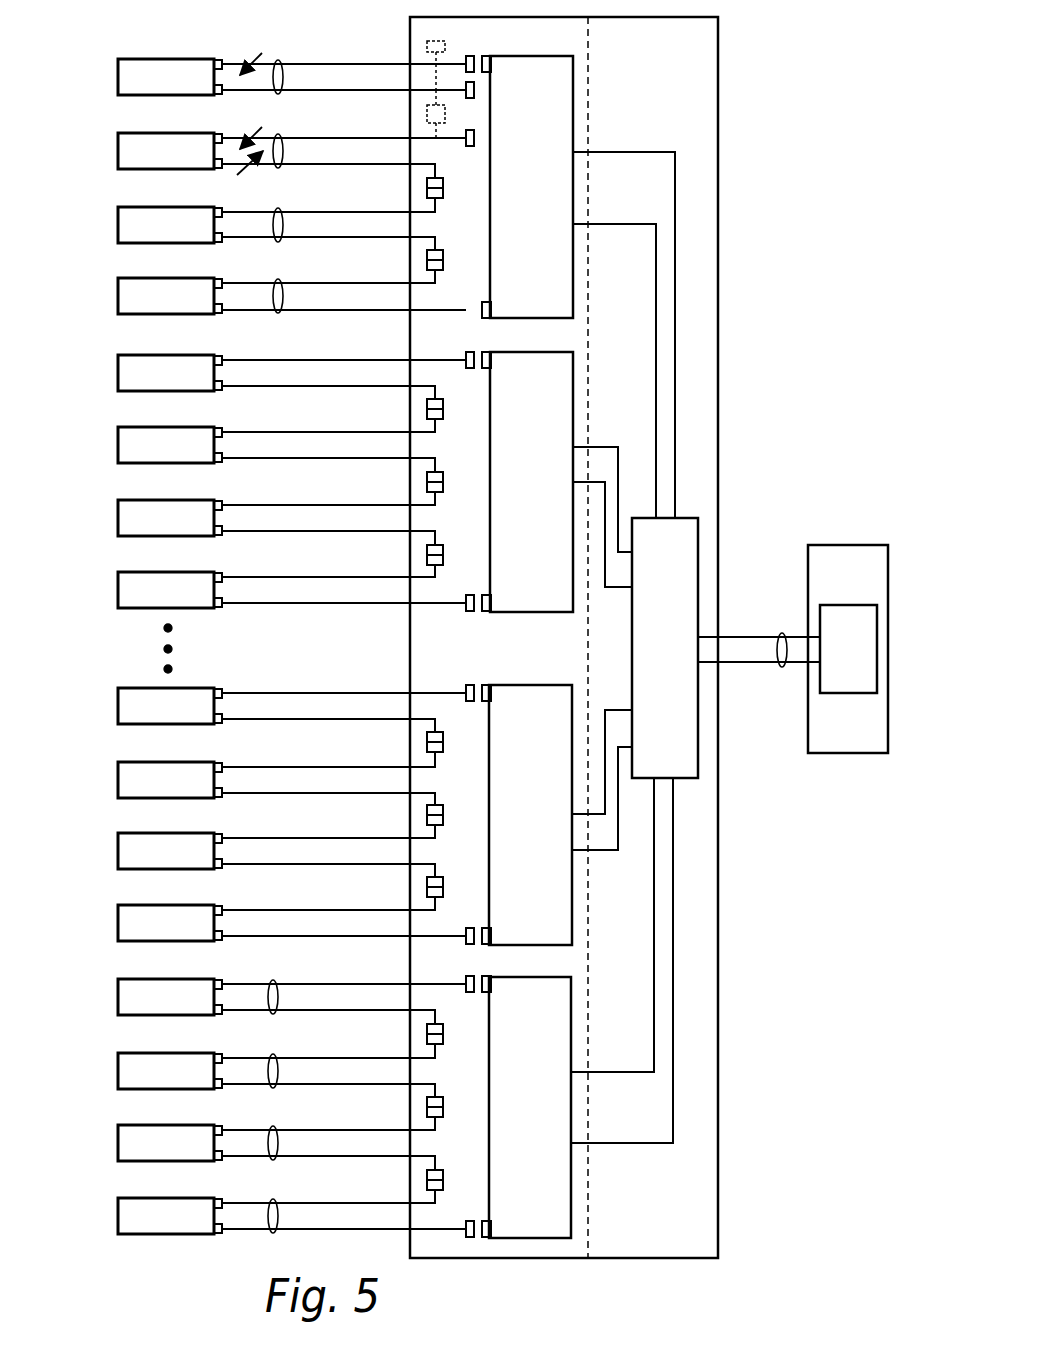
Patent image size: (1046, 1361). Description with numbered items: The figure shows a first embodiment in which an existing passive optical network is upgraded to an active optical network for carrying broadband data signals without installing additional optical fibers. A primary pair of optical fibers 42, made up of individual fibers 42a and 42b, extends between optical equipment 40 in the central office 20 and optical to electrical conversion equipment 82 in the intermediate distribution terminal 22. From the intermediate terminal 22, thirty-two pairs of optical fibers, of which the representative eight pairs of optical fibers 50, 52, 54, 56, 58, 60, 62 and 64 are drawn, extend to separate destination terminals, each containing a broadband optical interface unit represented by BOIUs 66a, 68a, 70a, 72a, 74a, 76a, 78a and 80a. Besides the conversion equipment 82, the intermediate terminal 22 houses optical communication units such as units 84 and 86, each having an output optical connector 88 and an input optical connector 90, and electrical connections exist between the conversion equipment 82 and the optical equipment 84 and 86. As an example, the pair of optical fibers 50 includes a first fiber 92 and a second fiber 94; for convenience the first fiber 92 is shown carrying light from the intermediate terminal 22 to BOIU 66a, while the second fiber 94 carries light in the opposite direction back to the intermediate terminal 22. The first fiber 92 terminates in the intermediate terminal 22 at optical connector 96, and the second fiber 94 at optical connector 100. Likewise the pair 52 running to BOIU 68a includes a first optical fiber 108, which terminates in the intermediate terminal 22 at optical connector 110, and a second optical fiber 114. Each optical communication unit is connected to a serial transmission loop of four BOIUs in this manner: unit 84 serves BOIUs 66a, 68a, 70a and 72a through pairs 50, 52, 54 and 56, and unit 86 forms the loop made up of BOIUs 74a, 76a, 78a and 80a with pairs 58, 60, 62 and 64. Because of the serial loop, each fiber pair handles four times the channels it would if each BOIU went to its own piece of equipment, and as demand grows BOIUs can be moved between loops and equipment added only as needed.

The central office 20 is at (848, 545).
The intermediate distribution terminal 22 is at (720, 297).
The optical equipment 40 is at (848, 605).
The primary pair of optical fibers 42 is at (759, 660).
The individual fiber 42a is at (730, 644).
The individual fiber 42b is at (733, 662).
The pair of optical fibers 50 is at (278, 60).
The pair of optical fibers 52 is at (278, 134).
The pair of optical fibers 54 is at (278, 208).
The pair of optical fibers 56 is at (278, 279).
The pair of optical fibers 58 is at (273, 980).
The pair of optical fibers 60 is at (273, 1054).
The pair of optical fibers 62 is at (273, 1126).
The pair of optical fibers 64 is at (273, 1199).
The broadband optical interface unit 66a is at (118, 80).
The broadband optical interface unit 68a is at (118, 154).
The broadband optical interface unit 70a is at (118, 228).
The broadband optical interface unit 72a is at (118, 300).
The broadband optical interface unit 74a is at (118, 1001).
The broadband optical interface unit 76a is at (118, 1074).
The broadband optical interface unit 78a is at (118, 1147).
The broadband optical interface unit 80a is at (118, 1219).
The optical to electrical conversion equipment 82 is at (665, 648).
The optical communication unit 84 is at (582, 287).
The optical communication unit 86 is at (581, 1008).
The output optical connector 88 is at (491, 62).
The input optical connector 90 is at (491, 310).
The first fiber 92 is at (344, 64).
The second fiber 94 is at (357, 90).
The optical connector 96 is at (474, 56).
The optical connector 100 is at (474, 90).
The first optical fiber 108 is at (399, 138).
The optical connector 110 is at (474, 138).
The second optical fiber 114 is at (401, 164).